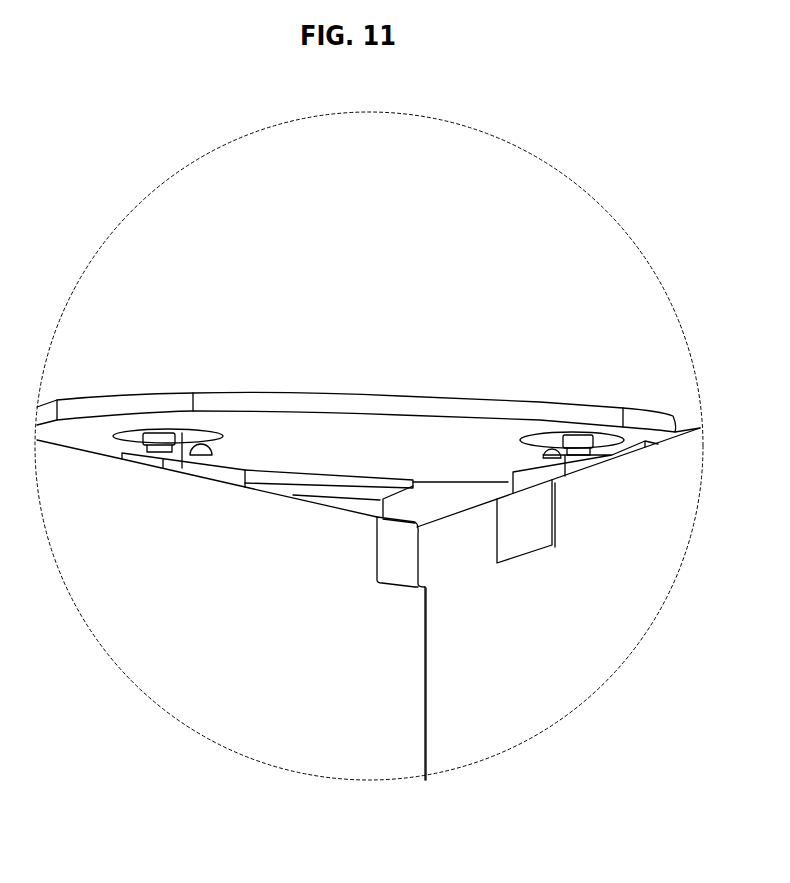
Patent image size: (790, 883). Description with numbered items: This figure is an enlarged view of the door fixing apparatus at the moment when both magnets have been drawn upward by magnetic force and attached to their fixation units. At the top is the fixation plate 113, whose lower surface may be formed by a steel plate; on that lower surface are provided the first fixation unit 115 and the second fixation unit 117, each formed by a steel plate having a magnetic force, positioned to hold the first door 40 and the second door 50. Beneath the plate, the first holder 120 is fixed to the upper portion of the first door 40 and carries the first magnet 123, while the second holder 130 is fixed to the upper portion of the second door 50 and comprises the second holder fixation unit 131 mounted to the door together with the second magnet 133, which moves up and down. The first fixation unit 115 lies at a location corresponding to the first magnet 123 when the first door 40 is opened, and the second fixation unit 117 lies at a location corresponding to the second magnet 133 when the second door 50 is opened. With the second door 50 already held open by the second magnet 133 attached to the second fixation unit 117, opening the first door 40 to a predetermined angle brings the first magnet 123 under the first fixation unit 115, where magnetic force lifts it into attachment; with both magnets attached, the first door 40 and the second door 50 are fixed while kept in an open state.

The fixation plate 113 is at (355, 427).
The first magnet 123 is at (145, 427).
The first fixation unit 115 is at (203, 433).
The second fixation unit 117 is at (550, 440).
The second magnet 133 is at (580, 440).
The first holder 120 is at (183, 474).
The second holder 130 is at (594, 467).
The second holder fixation unit 131 is at (532, 540).
The first door 40 is at (195, 658).
The second door 50 is at (577, 673).